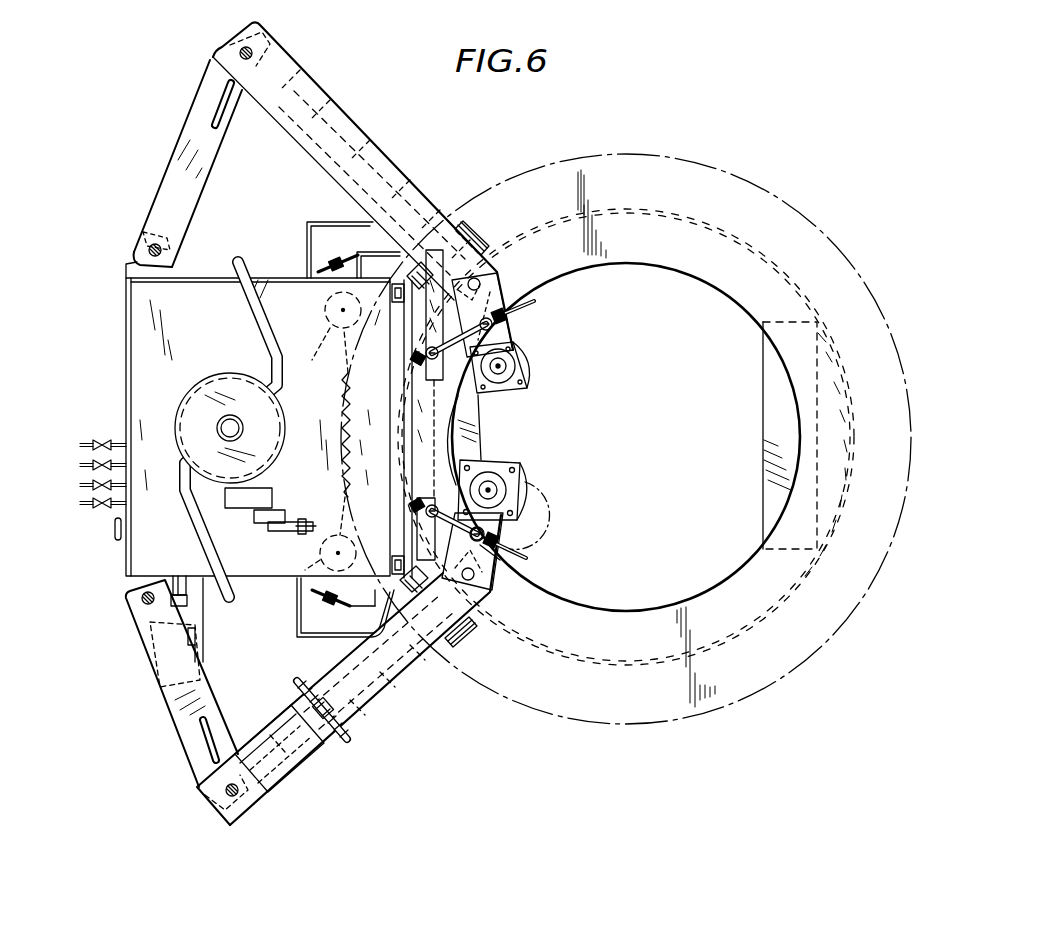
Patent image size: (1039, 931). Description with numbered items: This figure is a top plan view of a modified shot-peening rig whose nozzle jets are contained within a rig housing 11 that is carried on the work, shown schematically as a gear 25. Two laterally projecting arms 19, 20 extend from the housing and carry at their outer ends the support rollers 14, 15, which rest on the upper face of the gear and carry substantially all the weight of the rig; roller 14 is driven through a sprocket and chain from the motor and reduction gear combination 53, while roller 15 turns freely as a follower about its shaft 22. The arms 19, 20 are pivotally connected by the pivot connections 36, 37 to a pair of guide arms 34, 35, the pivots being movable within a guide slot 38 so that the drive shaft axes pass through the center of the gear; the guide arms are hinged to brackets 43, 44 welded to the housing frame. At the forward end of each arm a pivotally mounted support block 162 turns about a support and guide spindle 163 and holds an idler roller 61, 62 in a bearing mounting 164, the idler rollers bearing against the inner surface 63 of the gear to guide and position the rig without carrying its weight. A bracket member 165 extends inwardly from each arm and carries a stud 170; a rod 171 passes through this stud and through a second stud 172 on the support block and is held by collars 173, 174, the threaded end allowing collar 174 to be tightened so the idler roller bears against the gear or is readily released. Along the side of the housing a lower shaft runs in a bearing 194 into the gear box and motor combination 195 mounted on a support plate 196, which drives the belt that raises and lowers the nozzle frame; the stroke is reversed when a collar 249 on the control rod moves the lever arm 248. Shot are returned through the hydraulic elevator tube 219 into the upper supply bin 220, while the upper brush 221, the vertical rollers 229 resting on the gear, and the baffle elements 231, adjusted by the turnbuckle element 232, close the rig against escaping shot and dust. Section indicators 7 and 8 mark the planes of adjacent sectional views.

The section line 7- 7 is at (102, 800).
The section line 8- 8 is at (78, 423).
The rig housing 11 is at (195, 278).
The support roller 14 is at (459, 648).
The support roller 15 is at (462, 228).
The laterally projecting arm 19 is at (368, 709).
The laterally projecting arm 20 is at (346, 122).
The shaft 22 is at (420, 202).
The gear 25 is at (866, 300).
The guide arm 34 is at (173, 714).
The guide arm 35 is at (181, 140).
The pivot connection 36 is at (222, 797).
The pivot connection 37 is at (276, 44).
The guide slot 38 is at (203, 742).
The bracket 43 is at (128, 586).
The bracket 44 is at (133, 267).
The motor and reduction gear combination 53 is at (320, 755).
The idler roller 61 is at (508, 463).
The idler roller 62 is at (505, 392).
The inner surface 63 is at (609, 610).
The support block 162 is at (498, 290).
The support and guide spindle 163 is at (497, 280).
The bearing mounting 164 is at (504, 366).
The bracket member 165 is at (430, 338).
The stud 170 is at (440, 492).
The rod 171 is at (518, 310).
The stud 172 is at (490, 530).
The collar 173 is at (412, 506).
The collar 174 is at (502, 567).
The bearing 194 is at (189, 572).
The gear box and motor combination 195 is at (204, 638).
The support plate 196 is at (193, 603).
The hydraulic elevator tube 219 is at (258, 320).
The upper supply bin 220 is at (229, 376).
The upper brush 221 is at (397, 386).
The vertical roller 229 is at (331, 330).
The baffle element 231 is at (386, 246).
The turnbuckle element 232 is at (316, 266).
The lever arm 248 is at (276, 531).
The collar 249 is at (272, 502).